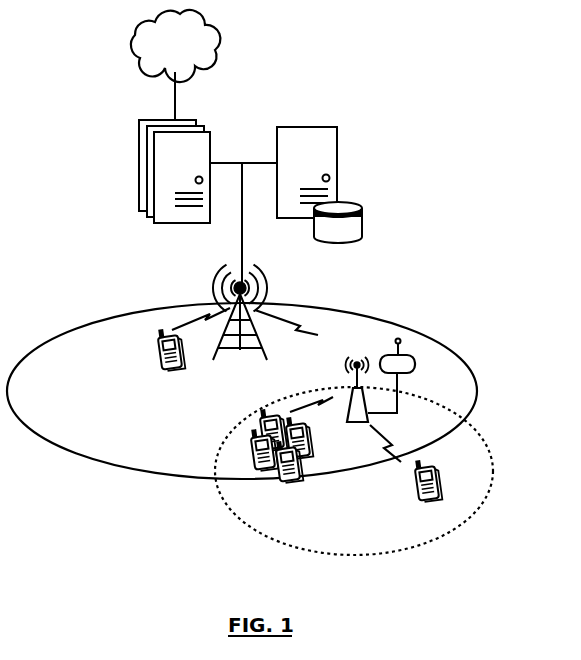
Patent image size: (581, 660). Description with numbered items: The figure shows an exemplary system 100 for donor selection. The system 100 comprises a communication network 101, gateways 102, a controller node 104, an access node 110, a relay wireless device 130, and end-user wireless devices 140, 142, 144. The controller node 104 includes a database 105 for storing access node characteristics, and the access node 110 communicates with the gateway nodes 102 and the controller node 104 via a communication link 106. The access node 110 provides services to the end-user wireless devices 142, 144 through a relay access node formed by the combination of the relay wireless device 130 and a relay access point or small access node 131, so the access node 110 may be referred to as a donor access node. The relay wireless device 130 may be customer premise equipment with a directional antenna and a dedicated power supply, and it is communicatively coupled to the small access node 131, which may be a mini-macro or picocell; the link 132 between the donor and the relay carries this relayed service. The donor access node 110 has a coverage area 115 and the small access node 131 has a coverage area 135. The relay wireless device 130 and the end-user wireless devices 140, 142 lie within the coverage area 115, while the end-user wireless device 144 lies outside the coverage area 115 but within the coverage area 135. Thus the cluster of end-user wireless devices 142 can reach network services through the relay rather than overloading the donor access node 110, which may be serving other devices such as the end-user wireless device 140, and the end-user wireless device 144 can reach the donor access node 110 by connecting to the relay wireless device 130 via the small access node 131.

The system 100 is at (273, 70).
The communication network 101 is at (161, 51).
The gateways 102 is at (140, 134).
The controller node 104 is at (338, 148).
The database 105 is at (360, 204).
The communication link 106 is at (241, 236).
The access node 110 is at (238, 362).
The coverage area 115 is at (113, 467).
The relay wireless device 130 is at (405, 355).
The relay access point 131 is at (352, 386).
The wireless backhaul link 132 is at (303, 330).
The coverage area 135 is at (486, 495).
The end-user wireless device 140 is at (152, 350).
The end-user wireless devices 142 is at (305, 468).
The end-user wireless device 144 is at (412, 499).